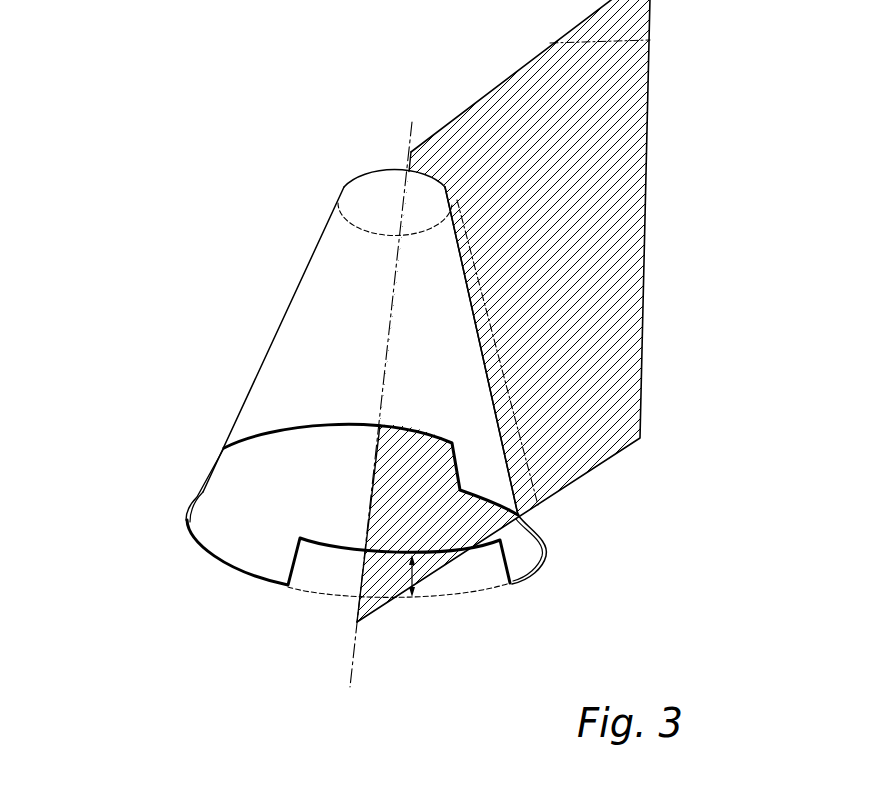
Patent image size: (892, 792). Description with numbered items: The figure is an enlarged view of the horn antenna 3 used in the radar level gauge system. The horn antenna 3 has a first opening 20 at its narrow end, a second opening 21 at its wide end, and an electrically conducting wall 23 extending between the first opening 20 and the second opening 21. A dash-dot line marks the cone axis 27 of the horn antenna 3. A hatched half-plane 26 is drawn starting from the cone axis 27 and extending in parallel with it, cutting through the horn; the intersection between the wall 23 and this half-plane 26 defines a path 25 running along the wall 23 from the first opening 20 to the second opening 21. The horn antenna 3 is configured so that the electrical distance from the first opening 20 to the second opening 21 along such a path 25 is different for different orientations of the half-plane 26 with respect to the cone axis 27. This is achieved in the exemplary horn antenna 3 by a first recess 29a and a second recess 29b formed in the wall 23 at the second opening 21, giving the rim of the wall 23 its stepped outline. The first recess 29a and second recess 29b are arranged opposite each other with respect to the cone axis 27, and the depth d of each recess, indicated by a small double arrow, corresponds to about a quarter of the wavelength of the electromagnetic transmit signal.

The horn antenna 3 is at (321, 409).
The first opening 20 is at (380, 208).
The second opening 21 is at (384, 528).
The electrically conducting wall 23 is at (246, 390).
The path 25 is at (455, 281).
The half-plane 26 is at (603, 340).
The cone axis 27 is at (352, 668).
The first recess 29a is at (253, 463).
The second recess 29b is at (332, 572).
The depth d is at (417, 577).